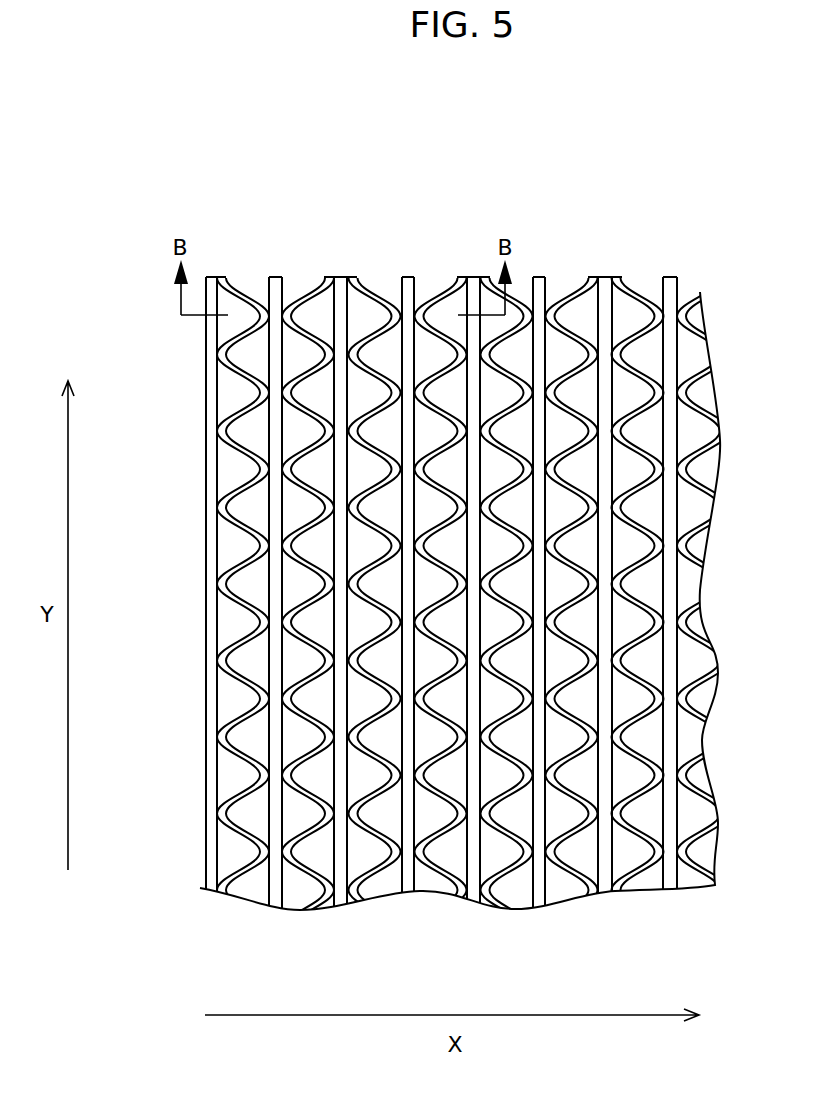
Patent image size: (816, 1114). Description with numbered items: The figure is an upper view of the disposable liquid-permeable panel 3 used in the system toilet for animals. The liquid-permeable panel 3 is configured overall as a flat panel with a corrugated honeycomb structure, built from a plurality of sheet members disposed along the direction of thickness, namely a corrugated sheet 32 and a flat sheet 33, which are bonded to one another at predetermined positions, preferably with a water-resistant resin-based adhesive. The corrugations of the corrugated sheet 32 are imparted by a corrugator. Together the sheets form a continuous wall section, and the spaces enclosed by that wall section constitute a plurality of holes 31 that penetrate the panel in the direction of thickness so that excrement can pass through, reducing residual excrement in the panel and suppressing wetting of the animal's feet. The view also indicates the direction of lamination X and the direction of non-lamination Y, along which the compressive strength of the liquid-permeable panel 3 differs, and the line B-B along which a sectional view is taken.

The liquid-permeable panel 3 is at (368, 208).
The holes 31 is at (233, 710).
The corrugated sheet 32 is at (247, 607).
The flat sheet 33 is at (212, 670).